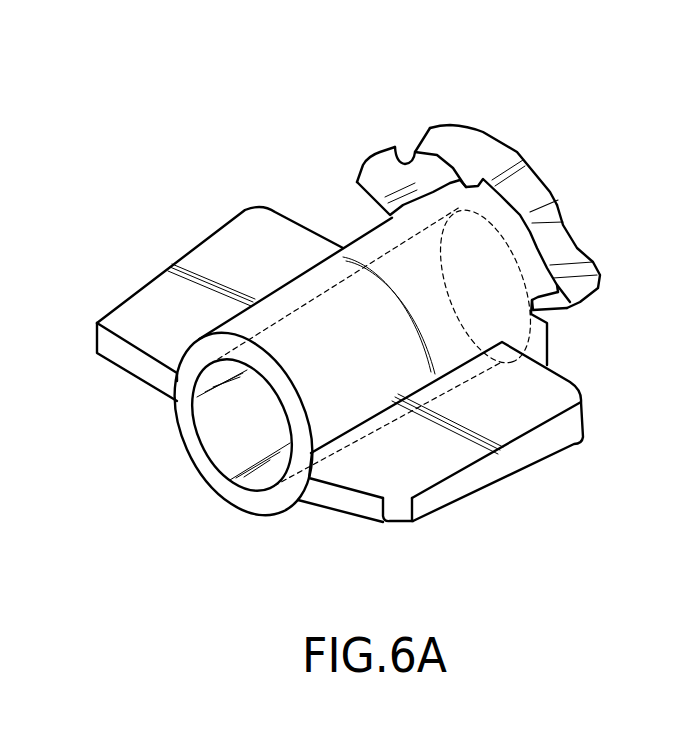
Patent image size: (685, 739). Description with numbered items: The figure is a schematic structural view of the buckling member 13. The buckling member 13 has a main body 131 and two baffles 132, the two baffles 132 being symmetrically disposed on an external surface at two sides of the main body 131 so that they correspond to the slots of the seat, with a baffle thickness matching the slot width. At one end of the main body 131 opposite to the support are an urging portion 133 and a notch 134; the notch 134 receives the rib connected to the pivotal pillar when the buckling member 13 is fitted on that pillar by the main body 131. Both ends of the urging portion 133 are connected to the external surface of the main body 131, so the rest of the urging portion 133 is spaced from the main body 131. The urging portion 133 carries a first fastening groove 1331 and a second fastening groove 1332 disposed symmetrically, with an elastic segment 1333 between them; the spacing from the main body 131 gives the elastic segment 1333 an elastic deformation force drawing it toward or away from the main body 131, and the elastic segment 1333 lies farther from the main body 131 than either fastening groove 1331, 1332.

The buckling member 13 is at (154, 425).
The main body 131 is at (343, 303).
The baffles 132 is at (170, 313).
The urging portion 133 is at (452, 122).
The first fastening groove 1331 is at (558, 242).
The second fastening groove 1332 is at (392, 158).
The elastic segment 1333 is at (497, 157).
The notch 134 is at (552, 345).